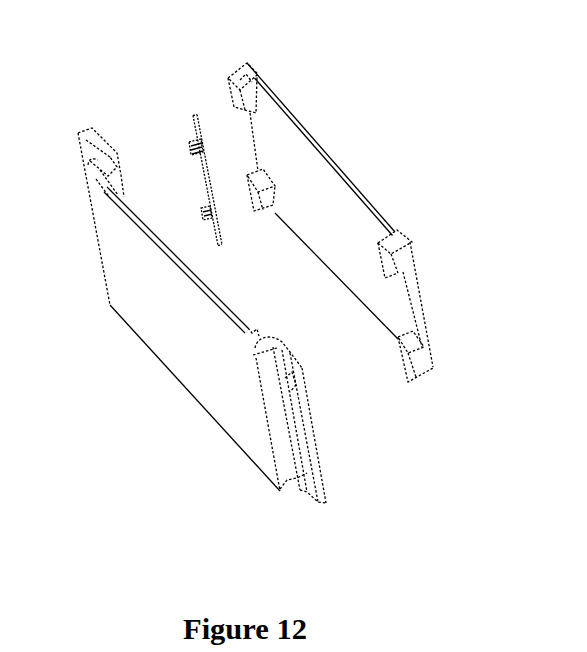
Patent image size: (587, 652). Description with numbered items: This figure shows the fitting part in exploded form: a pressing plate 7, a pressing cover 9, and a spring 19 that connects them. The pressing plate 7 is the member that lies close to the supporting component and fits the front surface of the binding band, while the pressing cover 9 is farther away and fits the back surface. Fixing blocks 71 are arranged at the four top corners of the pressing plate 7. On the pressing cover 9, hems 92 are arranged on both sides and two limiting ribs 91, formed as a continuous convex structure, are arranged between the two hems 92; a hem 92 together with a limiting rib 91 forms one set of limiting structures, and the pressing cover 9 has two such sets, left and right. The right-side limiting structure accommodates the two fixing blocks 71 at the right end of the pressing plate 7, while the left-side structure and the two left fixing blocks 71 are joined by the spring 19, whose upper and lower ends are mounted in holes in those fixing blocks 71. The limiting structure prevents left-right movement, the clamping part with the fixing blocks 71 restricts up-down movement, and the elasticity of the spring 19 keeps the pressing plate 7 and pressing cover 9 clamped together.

The pressing plate 7 is at (340, 148).
The fixing blocks 71 is at (229, 79).
The spring 19 is at (190, 112).
The pressing cover 9 is at (136, 335).
The limiting ribs 91 is at (243, 336).
The hems 92 is at (284, 486).